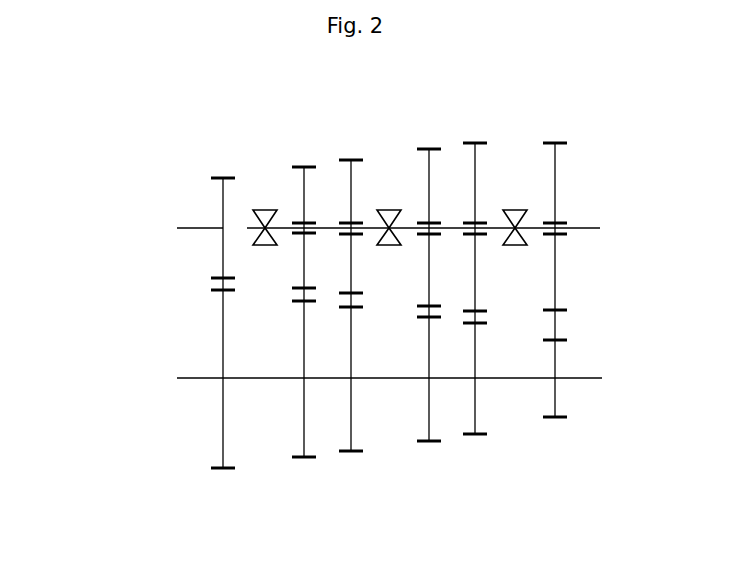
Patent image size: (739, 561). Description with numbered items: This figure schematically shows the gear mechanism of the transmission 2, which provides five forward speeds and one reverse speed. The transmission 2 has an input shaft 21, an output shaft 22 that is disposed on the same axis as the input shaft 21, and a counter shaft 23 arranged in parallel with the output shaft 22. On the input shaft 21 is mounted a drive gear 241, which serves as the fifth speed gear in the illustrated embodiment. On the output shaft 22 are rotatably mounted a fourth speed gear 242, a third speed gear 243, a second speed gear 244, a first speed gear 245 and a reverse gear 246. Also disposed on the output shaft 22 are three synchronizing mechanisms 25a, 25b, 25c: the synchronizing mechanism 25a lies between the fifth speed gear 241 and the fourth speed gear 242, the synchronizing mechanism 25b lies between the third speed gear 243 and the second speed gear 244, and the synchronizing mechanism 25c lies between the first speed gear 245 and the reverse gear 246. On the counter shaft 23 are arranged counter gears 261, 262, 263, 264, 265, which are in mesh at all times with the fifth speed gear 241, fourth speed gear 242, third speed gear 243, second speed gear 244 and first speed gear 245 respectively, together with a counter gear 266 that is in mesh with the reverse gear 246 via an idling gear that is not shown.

The transmission 2 is at (148, 297).
The input shaft 21 is at (195, 226).
The output shaft 22 is at (590, 226).
The counter shaft 23 is at (193, 380).
The drive gear 241 is at (217, 176).
The fourth speed gear 242 is at (302, 165).
The third speed gear 243 is at (354, 158).
The second speed gear 244 is at (425, 147).
The first speed gear 245 is at (469, 141).
The reverse gear 246 is at (557, 141).
The synchronizing mechanism 25a is at (265, 209).
The synchronizing mechanism 25b is at (389, 209).
The synchronizing mechanism 25c is at (515, 209).
The counter gear 261 is at (215, 472).
The counter gear 262 is at (297, 461).
The counter gear 263 is at (357, 455).
The counter gear 264 is at (433, 444).
The counter gear 265 is at (482, 437).
The counter gear 266 is at (562, 420).